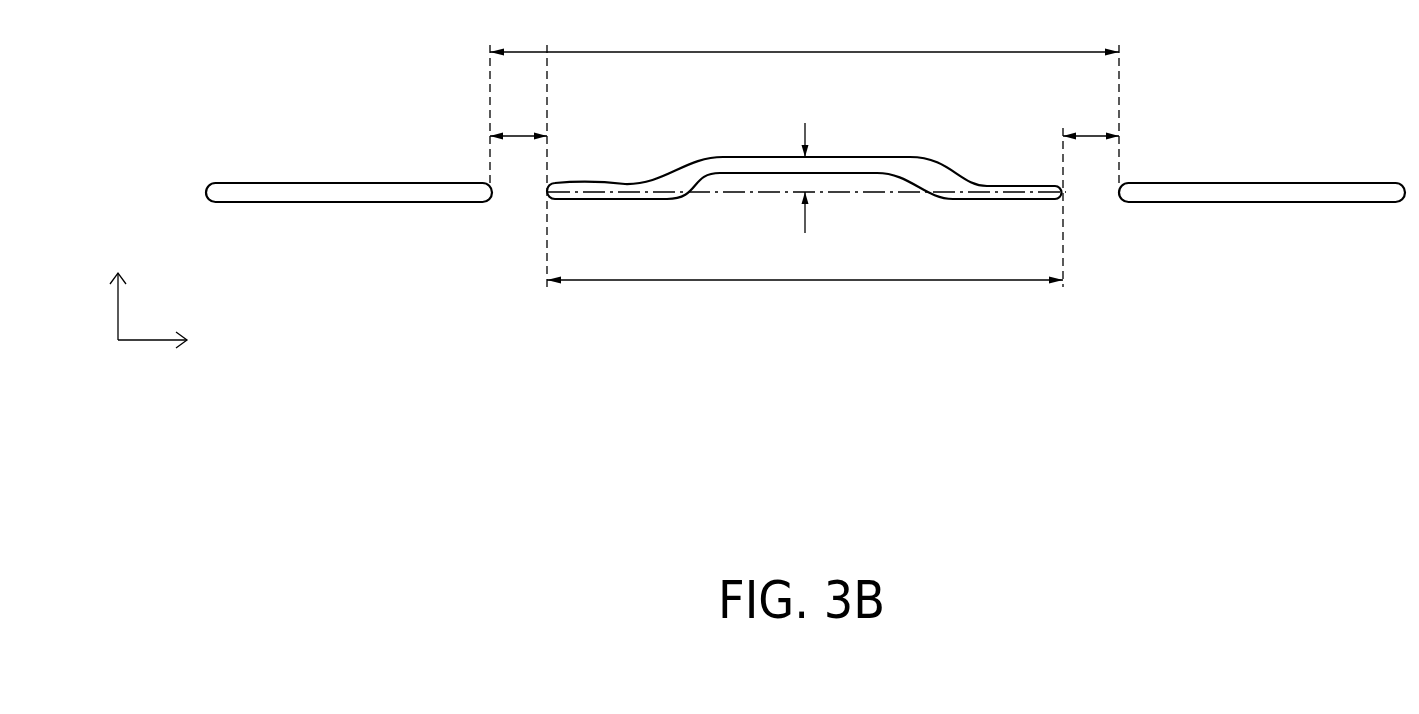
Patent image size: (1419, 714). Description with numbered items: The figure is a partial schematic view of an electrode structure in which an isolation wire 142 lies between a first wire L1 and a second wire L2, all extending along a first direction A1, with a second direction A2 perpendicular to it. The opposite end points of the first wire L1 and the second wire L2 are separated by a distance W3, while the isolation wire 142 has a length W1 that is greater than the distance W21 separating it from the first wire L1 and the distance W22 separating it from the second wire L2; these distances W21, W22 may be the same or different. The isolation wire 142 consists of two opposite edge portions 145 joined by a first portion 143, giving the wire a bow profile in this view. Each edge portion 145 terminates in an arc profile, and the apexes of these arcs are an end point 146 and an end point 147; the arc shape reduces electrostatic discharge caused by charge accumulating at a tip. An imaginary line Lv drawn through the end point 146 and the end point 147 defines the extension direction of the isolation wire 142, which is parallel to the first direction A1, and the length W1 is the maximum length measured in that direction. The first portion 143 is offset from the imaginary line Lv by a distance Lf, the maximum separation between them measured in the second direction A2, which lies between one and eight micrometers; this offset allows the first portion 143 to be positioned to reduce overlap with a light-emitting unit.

The isolation wire 142 is at (727, 141).
The first portion 143 is at (872, 167).
The edge portions 145 is at (600, 197).
The end point 146 is at (547, 192).
The end point 147 is at (1063, 192).
The first wire L1 is at (347, 192).
The second wire L2 is at (1262, 192).
The distance Lf is at (805, 182).
The imaginary line Lv is at (915, 195).
The length W1 is at (805, 265).
The distance W21 is at (522, 117).
The distance W22 is at (1086, 117).
The distance W3 is at (804, 35).
The first direction A1 is at (175, 342).
The second direction A2 is at (120, 291).